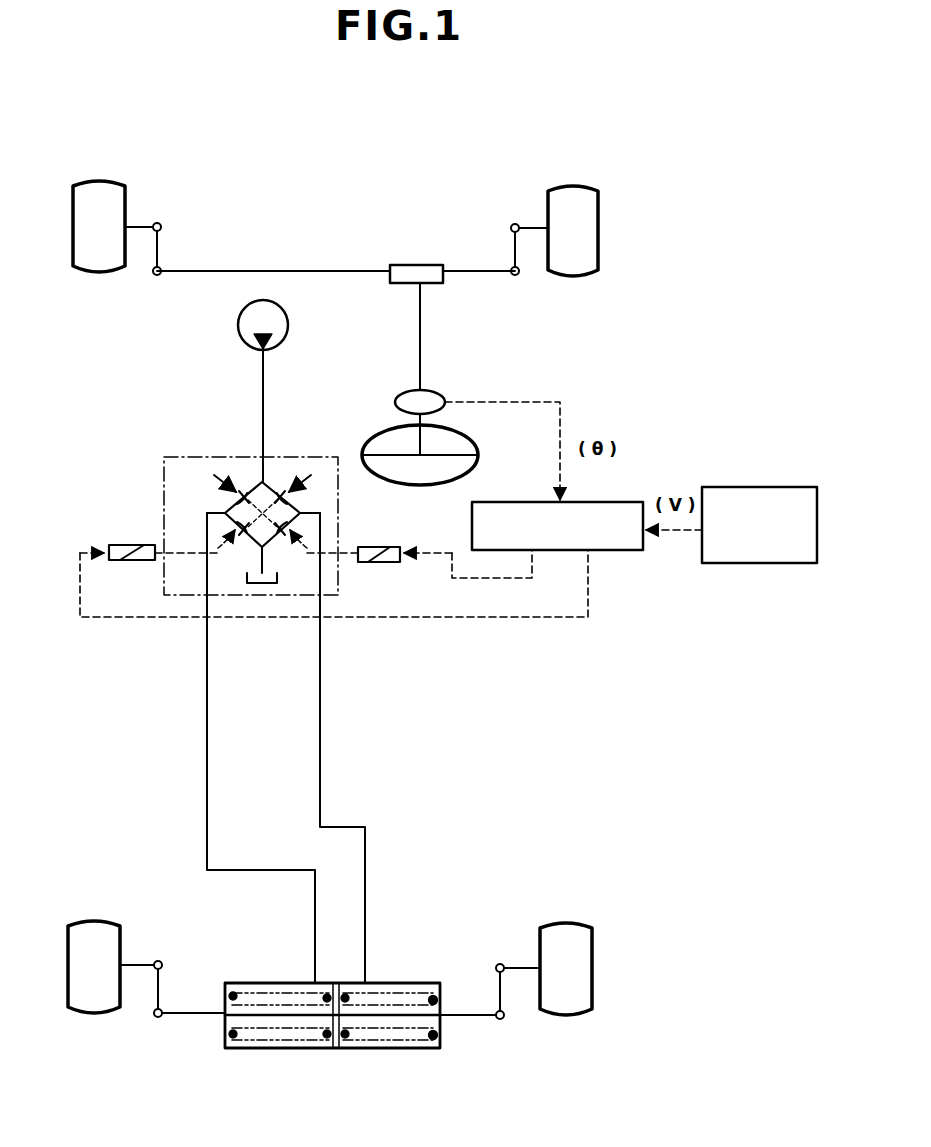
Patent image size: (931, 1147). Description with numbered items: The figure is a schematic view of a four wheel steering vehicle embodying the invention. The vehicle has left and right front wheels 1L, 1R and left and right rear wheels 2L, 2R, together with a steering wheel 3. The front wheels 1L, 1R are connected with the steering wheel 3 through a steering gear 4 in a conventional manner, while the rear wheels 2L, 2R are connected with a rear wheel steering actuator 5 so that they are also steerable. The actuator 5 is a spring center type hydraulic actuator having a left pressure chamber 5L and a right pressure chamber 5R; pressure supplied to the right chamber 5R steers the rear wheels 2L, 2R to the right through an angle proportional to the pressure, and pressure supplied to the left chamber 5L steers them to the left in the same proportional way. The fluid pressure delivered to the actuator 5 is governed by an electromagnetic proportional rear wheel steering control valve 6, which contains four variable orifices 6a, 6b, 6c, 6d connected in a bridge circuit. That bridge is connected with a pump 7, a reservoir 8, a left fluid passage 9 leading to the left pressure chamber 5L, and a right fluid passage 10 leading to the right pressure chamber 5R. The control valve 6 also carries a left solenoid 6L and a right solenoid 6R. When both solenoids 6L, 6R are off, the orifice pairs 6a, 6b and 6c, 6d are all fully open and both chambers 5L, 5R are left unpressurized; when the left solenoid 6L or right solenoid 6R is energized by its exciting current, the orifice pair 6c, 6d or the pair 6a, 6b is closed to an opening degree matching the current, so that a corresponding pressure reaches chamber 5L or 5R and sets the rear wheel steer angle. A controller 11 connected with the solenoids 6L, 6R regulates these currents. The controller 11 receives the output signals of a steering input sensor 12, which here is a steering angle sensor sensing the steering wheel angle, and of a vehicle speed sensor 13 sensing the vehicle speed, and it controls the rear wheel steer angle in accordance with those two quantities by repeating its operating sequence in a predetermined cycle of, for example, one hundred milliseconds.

The left front wheel 1L is at (107, 181).
The right front wheel 1R is at (575, 188).
The left rear wheel 2L is at (95, 918).
The right rear wheel 2R is at (555, 925).
The steering wheel 3 is at (375, 440).
The steering gear 4 is at (415, 265).
The rear wheel steering actuator 5 is at (332, 1009).
The left pressure chamber 5L is at (264, 982).
The right pressure chamber 5R is at (398, 982).
The rear wheel steering control valve 6 is at (248, 521).
The variable orifice 6a is at (236, 478).
The variable orifice 6b is at (285, 545).
The variable orifice 6c is at (240, 545).
The variable orifice 6d is at (287, 478).
The left solenoid 6L is at (133, 544).
The right solenoid 6R is at (378, 546).
The pump 7 is at (241, 316).
The reservoir 8 is at (265, 585).
The left fluid passage 9 is at (206, 729).
The right fluid passage 10 is at (322, 740).
The controller 11 is at (512, 501).
The steering input sensor 12 is at (441, 393).
The vehicle speed sensor 13 is at (757, 486).